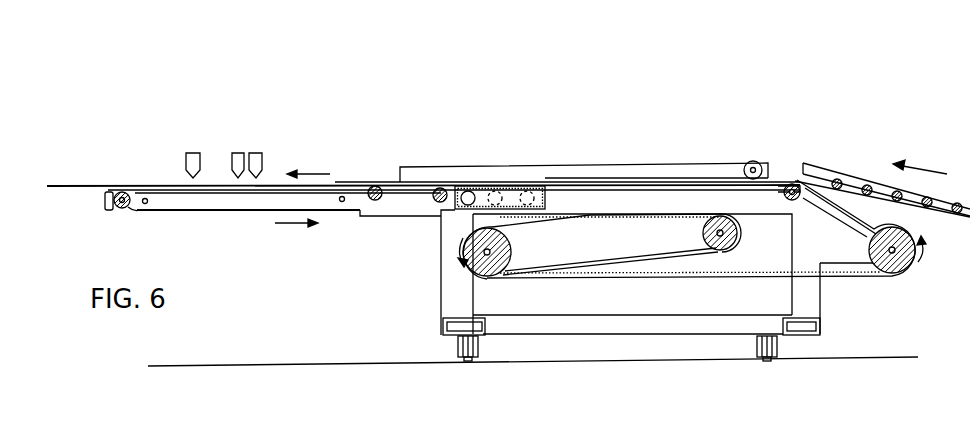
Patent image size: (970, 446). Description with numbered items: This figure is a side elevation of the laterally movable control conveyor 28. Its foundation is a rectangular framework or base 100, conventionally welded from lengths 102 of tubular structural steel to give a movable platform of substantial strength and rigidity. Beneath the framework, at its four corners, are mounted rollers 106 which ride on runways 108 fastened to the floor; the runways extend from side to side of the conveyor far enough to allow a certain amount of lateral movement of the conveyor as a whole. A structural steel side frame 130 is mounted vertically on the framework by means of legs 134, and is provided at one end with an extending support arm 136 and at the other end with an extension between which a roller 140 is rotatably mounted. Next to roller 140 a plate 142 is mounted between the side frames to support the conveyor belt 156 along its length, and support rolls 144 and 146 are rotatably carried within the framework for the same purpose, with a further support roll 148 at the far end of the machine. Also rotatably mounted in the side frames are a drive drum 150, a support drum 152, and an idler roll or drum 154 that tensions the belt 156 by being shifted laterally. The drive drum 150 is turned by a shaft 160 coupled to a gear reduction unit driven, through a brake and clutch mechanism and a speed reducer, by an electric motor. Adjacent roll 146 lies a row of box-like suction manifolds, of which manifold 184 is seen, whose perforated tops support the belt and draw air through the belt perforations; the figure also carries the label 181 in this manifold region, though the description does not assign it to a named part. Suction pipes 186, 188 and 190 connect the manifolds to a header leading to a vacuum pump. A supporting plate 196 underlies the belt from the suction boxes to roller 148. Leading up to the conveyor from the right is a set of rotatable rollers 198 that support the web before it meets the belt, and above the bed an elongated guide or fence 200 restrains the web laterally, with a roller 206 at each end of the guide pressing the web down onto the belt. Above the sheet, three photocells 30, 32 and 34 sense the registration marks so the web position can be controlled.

The conveyor 28 is at (787, 156).
The photocell 30 is at (194, 152).
The photocell 32 is at (238, 152).
The photocell 34 is at (263, 168).
The framework or base 100 is at (673, 333).
The lengths of tubular structural steel 102 is at (444, 328).
The rollers 106 is at (458, 347).
The runways 108 is at (468, 362).
The side frame 130 is at (104, 203).
The legs 134 is at (440, 290).
The support arm 136 is at (850, 260).
The roller 140 is at (130, 207).
The plate 142 is at (166, 198).
The support roll 144 is at (390, 185).
The support roll 146 is at (434, 196).
The support roll 148 is at (783, 193).
The drive drum 150 is at (505, 238).
The support drum 152 is at (868, 238).
The idler roll or drum 154 is at (703, 230).
The conveyor belt 156 is at (233, 210).
The shaft 160 is at (490, 254).
The housing 181 is at (485, 185).
The manifold 184 is at (452, 200).
The suction pipe 186 is at (464, 190).
The suction pipe 188 is at (495, 190).
The suction pipe 190 is at (530, 190).
The supporting plate 196 is at (697, 186).
The set of rotatable rollers 198 is at (962, 158).
The guide or fence 200 is at (673, 164).
The roller 206 is at (748, 162).